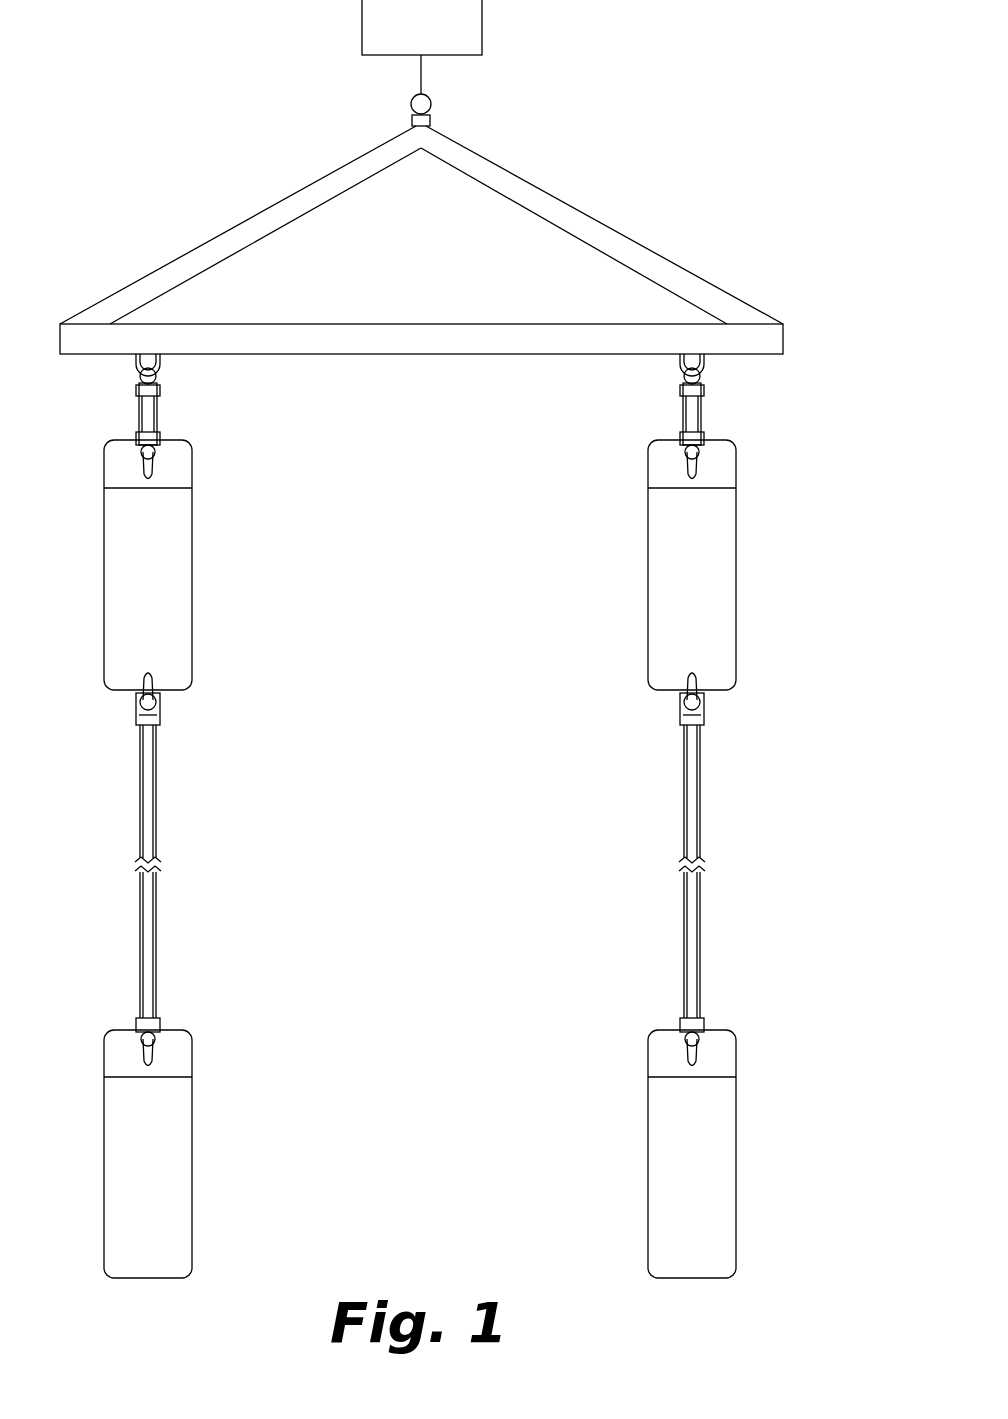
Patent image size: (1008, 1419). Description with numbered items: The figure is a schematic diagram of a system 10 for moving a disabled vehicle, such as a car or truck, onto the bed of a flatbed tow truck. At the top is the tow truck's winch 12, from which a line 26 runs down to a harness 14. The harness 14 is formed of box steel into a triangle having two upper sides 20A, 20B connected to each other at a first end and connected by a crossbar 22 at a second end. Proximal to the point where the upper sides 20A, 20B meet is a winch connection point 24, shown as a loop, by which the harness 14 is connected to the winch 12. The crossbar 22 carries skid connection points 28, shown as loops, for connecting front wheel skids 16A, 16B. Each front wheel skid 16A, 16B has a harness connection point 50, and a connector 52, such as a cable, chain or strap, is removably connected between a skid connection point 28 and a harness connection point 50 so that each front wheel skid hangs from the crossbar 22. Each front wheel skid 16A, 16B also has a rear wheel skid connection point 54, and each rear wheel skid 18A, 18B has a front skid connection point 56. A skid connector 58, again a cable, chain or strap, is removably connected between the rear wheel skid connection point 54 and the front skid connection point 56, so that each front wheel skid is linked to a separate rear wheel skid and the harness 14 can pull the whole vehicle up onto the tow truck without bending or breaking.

The system for moving a disabled vehicle 10 is at (803, 801).
The winch 12 is at (483, 25).
The harness 14 is at (470, 240).
The front wheel skid 16A is at (160, 578).
The front wheel skid 16B is at (704, 578).
The rear wheel skid 18A is at (160, 1168).
The rear wheel skid 18B is at (704, 1168).
The upper side 20A is at (252, 232).
The upper side 20B is at (553, 206).
The crossbar 22 is at (770, 340).
The winch connection point 24 is at (432, 105).
The winch cable 26 is at (418, 72).
The skid connection point 28 is at (157, 357).
The harness connection point 50 is at (154, 476).
The connector 52 is at (142, 415).
The rear wheel skid connection point 54 is at (153, 680).
The front skid connection point 56 is at (155, 1065).
The skid connector 58 is at (154, 805).